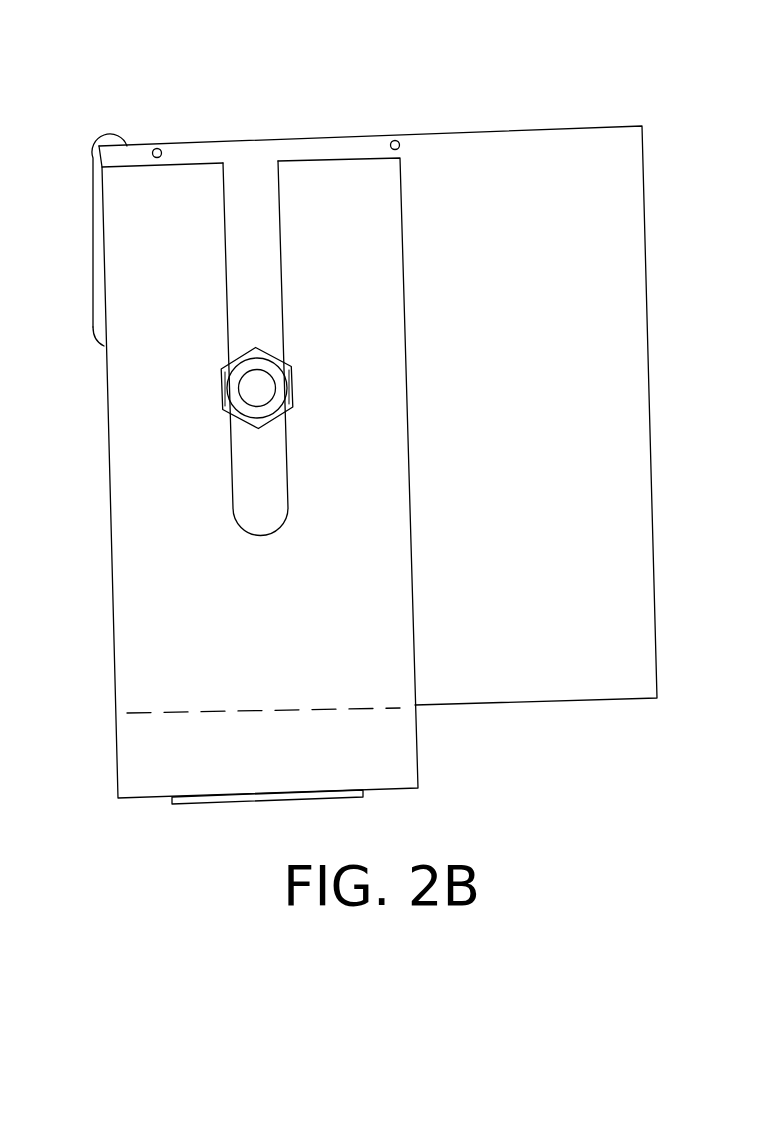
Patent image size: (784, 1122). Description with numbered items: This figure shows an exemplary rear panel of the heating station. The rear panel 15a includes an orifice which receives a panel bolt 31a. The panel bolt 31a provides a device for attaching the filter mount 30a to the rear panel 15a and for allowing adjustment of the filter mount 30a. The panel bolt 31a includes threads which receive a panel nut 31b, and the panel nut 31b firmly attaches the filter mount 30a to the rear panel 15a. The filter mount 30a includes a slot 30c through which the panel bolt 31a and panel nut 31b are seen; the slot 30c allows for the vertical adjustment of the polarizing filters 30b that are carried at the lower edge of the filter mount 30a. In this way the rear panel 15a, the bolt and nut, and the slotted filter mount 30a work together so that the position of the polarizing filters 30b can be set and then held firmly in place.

The rear panel 15a is at (570, 688).
The filter mount 30a is at (385, 775).
The polarizing filters 30b is at (232, 803).
The slot 30c is at (247, 485).
The panel bolt 31a is at (262, 417).
The panel nut 31b is at (258, 378).